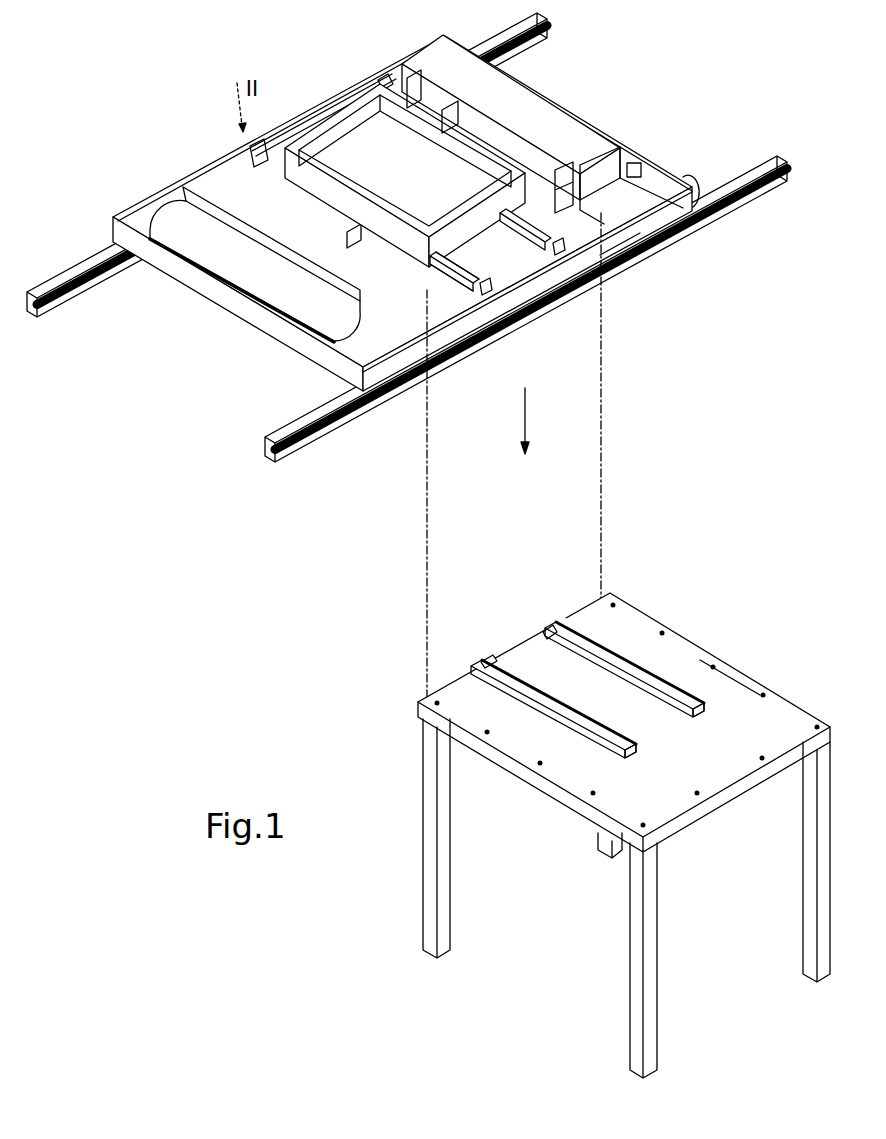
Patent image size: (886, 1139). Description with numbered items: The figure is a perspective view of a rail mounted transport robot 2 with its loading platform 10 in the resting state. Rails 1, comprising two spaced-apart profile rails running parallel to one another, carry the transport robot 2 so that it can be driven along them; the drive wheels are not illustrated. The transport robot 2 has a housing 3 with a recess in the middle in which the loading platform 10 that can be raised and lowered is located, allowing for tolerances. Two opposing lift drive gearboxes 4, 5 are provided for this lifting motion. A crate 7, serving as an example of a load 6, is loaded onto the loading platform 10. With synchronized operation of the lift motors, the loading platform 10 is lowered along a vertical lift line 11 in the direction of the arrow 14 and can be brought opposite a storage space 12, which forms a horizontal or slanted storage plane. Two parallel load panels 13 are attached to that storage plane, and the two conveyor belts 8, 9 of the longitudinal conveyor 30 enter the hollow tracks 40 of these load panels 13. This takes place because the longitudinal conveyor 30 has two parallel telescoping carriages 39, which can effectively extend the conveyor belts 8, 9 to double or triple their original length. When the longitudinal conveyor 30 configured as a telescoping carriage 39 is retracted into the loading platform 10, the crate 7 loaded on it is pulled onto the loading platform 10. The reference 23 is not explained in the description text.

The rails 1 is at (268, 435).
The transport robot 2 is at (621, 59).
The housing 3 is at (662, 183).
The lift drive gearbox 4 is at (512, 93).
The lift drive gearbox 5 is at (216, 190).
The load 6 is at (357, 128).
The crate 7 is at (357, 128).
The conveyor belt 8 is at (484, 293).
The conveyor belt 9 is at (617, 261).
The loading platform 10 is at (446, 292).
The vertical lift line 11 is at (427, 489).
The storage space 12 is at (642, 620).
The load panels 13 is at (549, 622).
The arrow 14 is at (528, 420).
The work surface 23 is at (733, 692).
The longitudinal conveyor 30 is at (490, 292).
The telescoping carriages 39 is at (515, 226).
The hollow tracks 40 is at (628, 754).